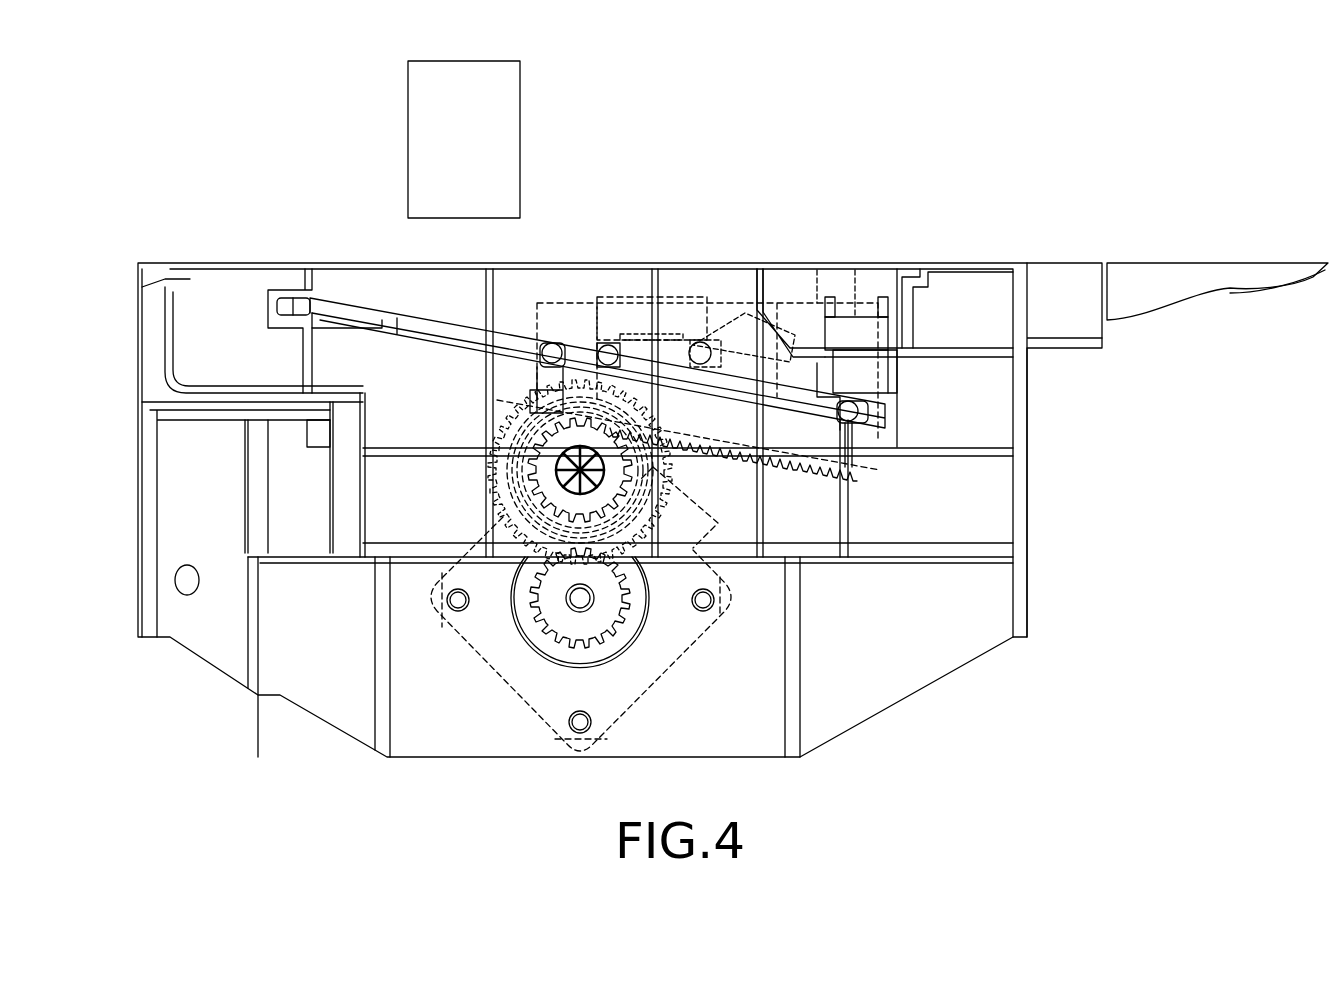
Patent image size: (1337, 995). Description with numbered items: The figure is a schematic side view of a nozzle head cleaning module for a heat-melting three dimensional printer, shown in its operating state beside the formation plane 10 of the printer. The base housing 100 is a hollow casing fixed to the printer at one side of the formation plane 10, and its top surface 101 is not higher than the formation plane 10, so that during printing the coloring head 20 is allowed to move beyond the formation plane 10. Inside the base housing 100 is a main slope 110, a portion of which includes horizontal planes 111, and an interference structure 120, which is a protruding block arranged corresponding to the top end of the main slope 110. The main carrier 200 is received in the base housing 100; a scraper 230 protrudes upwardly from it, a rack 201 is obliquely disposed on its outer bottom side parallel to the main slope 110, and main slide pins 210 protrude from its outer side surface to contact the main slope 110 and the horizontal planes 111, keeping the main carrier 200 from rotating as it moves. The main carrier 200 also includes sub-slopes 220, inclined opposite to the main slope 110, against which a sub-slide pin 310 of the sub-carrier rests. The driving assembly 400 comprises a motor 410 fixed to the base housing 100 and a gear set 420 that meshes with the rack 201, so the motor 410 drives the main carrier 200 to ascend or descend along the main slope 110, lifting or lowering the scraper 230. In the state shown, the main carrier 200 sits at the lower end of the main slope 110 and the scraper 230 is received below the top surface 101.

The formation plane 10 is at (1218, 263).
The coloring head 20 is at (420, 133).
The base housing 100 is at (993, 254).
The top surface 101 is at (930, 263).
The main slope 110 is at (414, 322).
The horizontal plane 111 is at (293, 308).
The interference structure 120 is at (355, 312).
The main carrier 200 is at (886, 437).
The rack 201 is at (805, 470).
The main slide pin 210 is at (552, 343).
The sub-slope 220 is at (735, 332).
The scraper 230 is at (855, 308).
The sub-slide pin 310 is at (700, 342).
The driving assembly 400 is at (685, 670).
The motor 410 is at (648, 690).
The gear set 420 is at (672, 460).